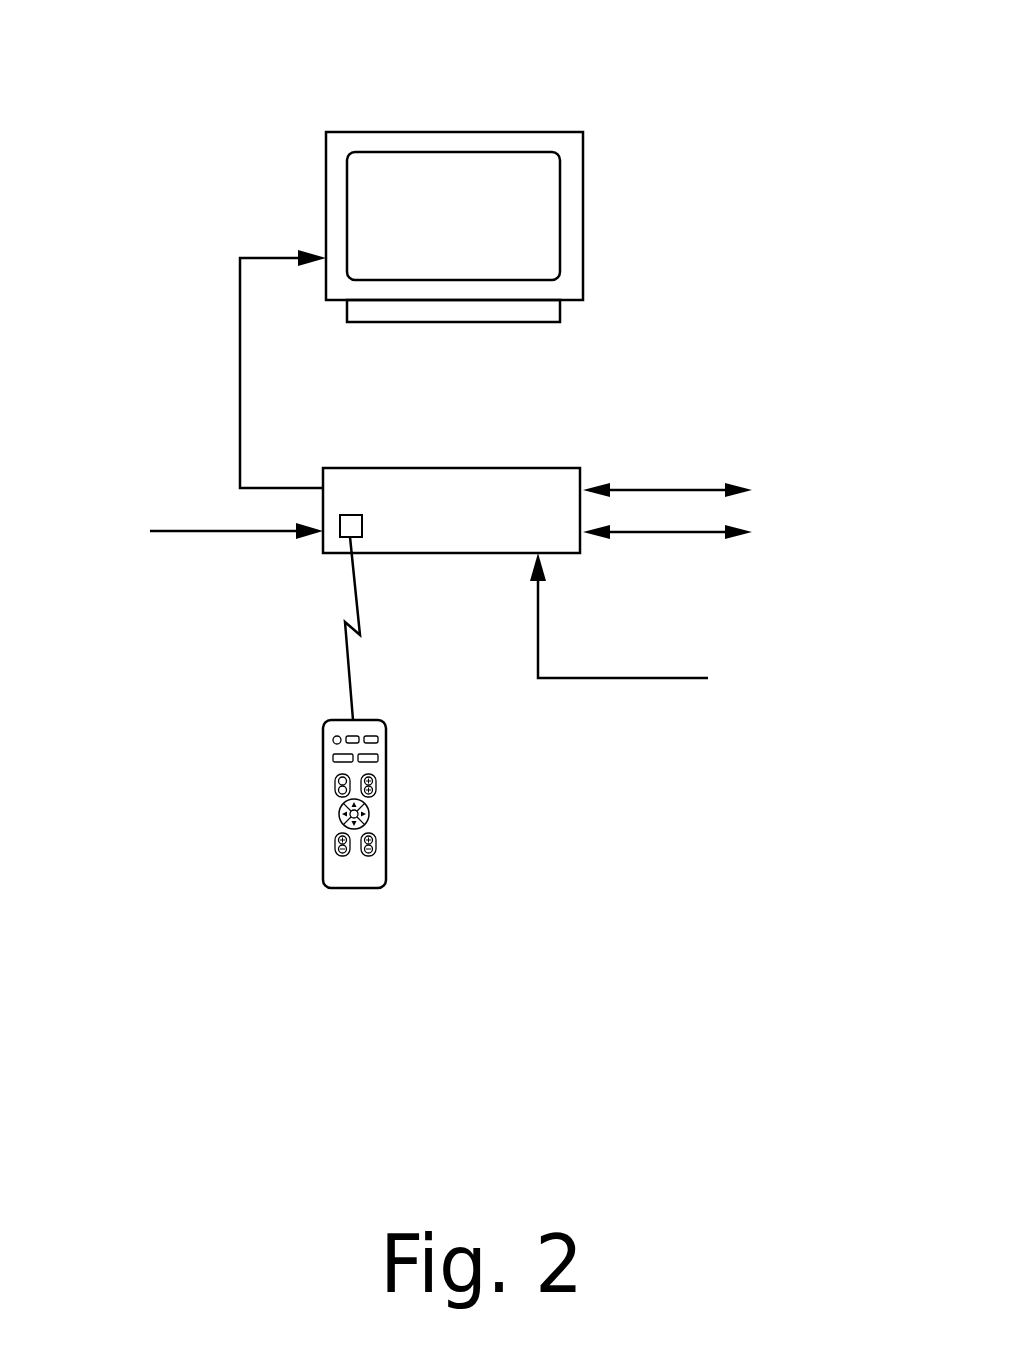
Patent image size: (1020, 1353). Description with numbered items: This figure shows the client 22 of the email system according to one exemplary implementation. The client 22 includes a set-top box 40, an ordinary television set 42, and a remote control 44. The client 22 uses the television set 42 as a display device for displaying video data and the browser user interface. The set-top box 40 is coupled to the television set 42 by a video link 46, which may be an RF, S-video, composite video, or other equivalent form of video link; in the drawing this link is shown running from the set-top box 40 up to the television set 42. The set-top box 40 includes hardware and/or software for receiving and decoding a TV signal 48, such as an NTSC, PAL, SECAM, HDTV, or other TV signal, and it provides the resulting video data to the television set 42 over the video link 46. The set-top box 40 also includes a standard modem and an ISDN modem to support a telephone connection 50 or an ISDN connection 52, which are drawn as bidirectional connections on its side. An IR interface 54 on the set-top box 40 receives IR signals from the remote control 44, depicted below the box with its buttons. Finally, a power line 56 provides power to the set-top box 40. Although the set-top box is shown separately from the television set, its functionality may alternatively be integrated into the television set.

The client 22 is at (384, 33).
The set-top box 40 is at (475, 468).
The television set 42 is at (583, 173).
The remote control 44 is at (386, 800).
The video link 46 is at (240, 423).
The TV signal 48 is at (195, 531).
The telephone connection 50 is at (645, 490).
The ISDN connection 52 is at (633, 532).
The IR interface 54 is at (362, 525).
The power line 56 is at (572, 678).